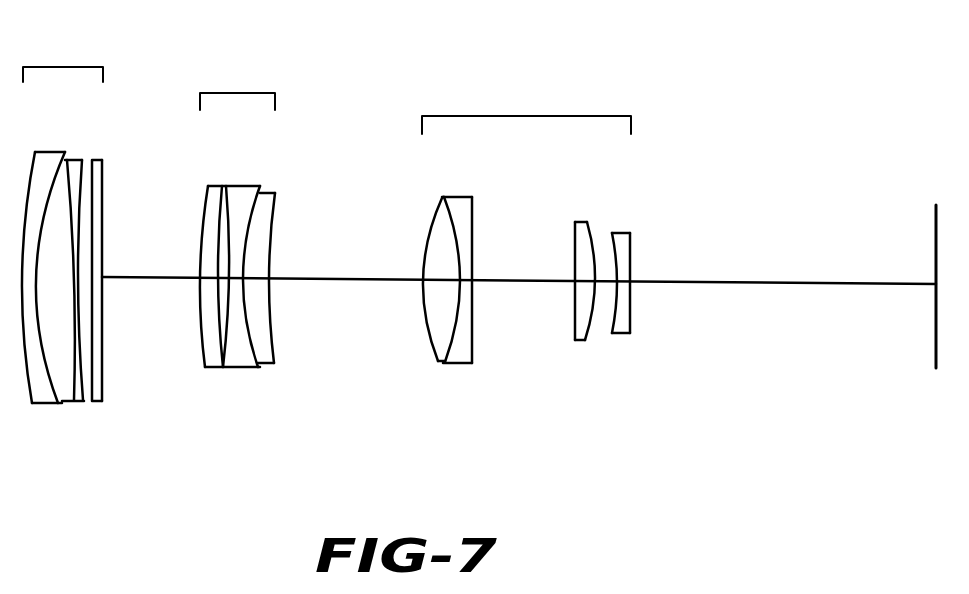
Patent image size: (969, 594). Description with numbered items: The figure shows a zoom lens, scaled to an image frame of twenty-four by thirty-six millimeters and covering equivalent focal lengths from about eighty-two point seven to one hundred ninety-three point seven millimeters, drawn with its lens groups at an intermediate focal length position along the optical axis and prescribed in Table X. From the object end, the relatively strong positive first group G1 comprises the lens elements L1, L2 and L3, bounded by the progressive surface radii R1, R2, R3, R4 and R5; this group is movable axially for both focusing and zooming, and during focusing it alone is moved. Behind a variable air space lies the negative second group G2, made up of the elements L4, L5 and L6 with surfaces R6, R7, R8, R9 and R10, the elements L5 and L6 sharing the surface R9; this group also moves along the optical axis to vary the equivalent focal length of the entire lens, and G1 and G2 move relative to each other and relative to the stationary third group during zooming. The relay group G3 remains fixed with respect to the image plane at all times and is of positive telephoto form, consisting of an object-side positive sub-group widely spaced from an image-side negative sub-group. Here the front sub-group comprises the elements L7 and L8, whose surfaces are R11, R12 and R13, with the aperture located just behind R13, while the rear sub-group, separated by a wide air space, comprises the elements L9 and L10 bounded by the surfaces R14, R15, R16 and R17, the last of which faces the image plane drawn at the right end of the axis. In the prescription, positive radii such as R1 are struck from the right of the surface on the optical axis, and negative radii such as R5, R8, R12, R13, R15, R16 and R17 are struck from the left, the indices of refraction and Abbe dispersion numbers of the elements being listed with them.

The first group G1 is at (87, 266).
The second group G2 is at (257, 244).
The third group G3 is at (540, 247).
The first lens element L1 is at (43, 158).
The second lens element L2 is at (75, 165).
The third lens element L3 is at (97, 175).
The fourth lens element L4 is at (213, 195).
The fifth lens element L5 is at (243, 193).
The sixth lens element L6 is at (265, 210).
The seventh lens element L7 is at (433, 206).
The eighth lens element L8 is at (465, 213).
The ninth lens element L9 is at (582, 230).
The tenth lens element L10 is at (625, 245).
The first lens surface radius R1 is at (30, 399).
The second lens surface radius R2 is at (52, 392).
The third lens surface radius R3 is at (76, 382).
The fourth lens surface radius R4 is at (85, 386).
The fifth lens surface radius R5 is at (103, 358).
The sixth lens surface radius R6 is at (202, 330).
The seventh lens surface radius R7 is at (220, 346).
The eighth lens surface radius R8 is at (233, 354).
The ninth lens surface radius R9 is at (247, 354).
The tenth lens surface radius R10 is at (275, 343).
The eleventh lens surface radius R11 is at (427, 329).
The twelfth lens surface radius R12 is at (435, 357).
The thirteenth lens surface radius R13 is at (474, 338).
The fourteenth lens surface radius R14 is at (574, 313).
The fifteenth lens surface radius R15 is at (592, 324).
The sixteenth lens surface radius R16 is at (604, 322).
The seventeenth lens surface radius R17 is at (631, 313).